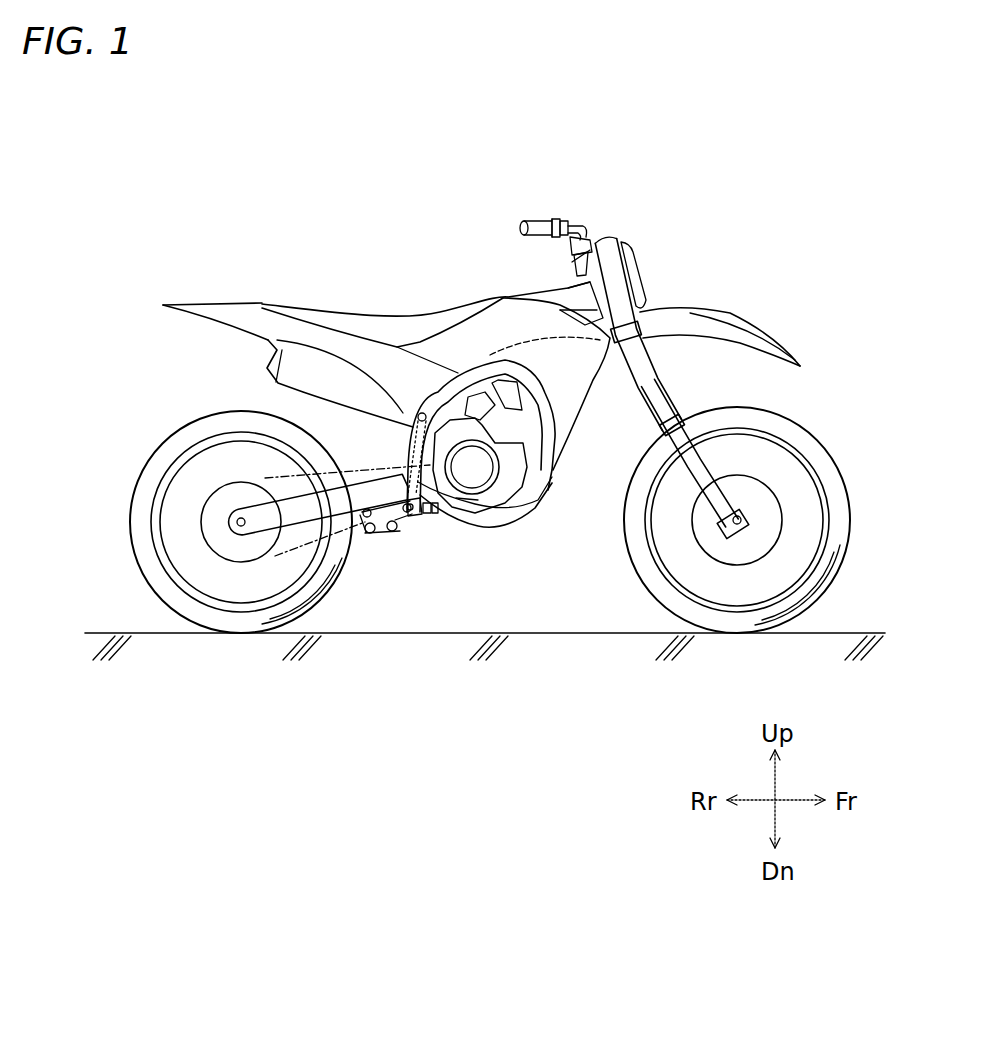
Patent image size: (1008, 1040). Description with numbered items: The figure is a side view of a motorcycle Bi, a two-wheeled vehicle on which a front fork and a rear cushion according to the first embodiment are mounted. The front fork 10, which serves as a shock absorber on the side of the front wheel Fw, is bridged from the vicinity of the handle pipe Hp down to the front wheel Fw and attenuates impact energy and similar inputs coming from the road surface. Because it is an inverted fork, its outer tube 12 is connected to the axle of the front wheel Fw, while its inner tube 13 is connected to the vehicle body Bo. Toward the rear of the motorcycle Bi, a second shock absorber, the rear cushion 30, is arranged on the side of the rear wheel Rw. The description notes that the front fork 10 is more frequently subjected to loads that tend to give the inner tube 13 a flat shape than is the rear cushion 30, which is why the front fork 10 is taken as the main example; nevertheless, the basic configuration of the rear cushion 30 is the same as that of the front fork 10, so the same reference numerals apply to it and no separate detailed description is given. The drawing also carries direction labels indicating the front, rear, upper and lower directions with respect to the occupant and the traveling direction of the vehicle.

The front fork 10 is at (542, 405).
The outer tube 12 is at (648, 378).
The inner tube 13 is at (698, 476).
The rear cushion 30 is at (415, 409).
The handle pipe Hp is at (562, 219).
The motorcycle Bi is at (766, 235).
The vehicle body Bo is at (555, 447).
The rear wheel Rw is at (170, 435).
The front wheel Fw is at (840, 470).